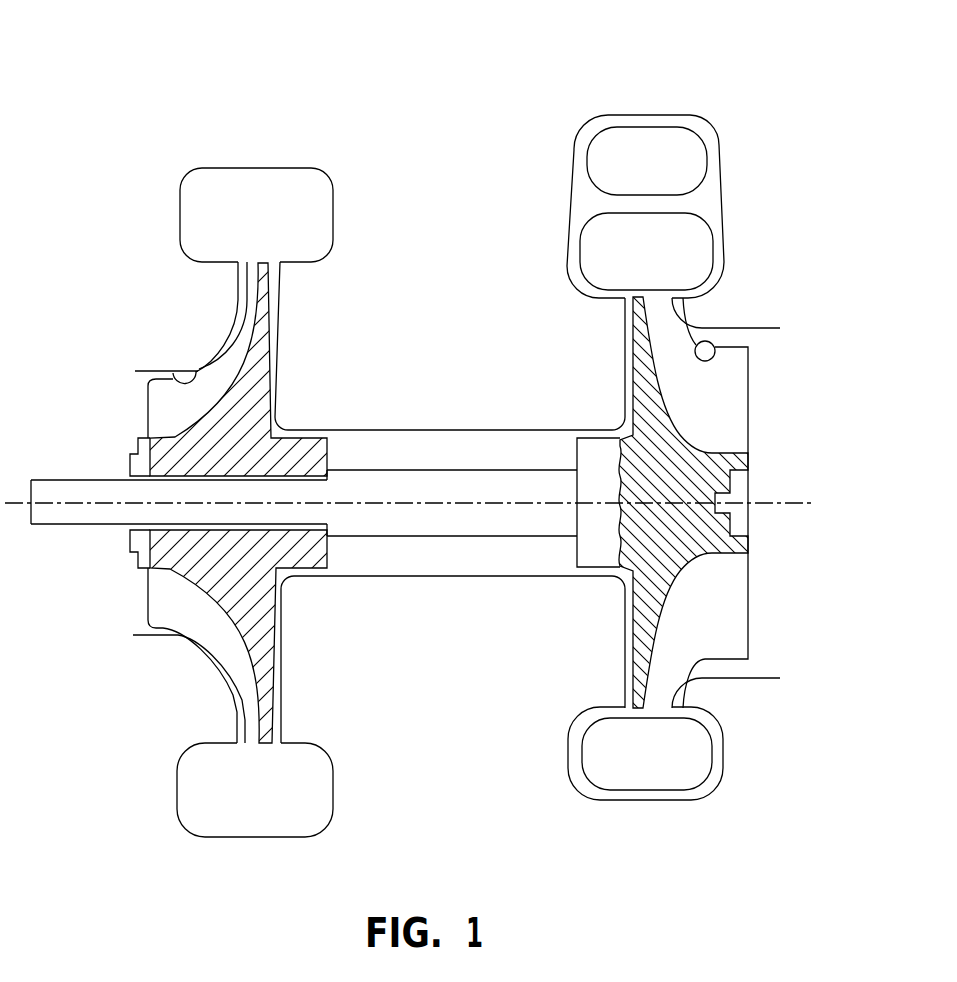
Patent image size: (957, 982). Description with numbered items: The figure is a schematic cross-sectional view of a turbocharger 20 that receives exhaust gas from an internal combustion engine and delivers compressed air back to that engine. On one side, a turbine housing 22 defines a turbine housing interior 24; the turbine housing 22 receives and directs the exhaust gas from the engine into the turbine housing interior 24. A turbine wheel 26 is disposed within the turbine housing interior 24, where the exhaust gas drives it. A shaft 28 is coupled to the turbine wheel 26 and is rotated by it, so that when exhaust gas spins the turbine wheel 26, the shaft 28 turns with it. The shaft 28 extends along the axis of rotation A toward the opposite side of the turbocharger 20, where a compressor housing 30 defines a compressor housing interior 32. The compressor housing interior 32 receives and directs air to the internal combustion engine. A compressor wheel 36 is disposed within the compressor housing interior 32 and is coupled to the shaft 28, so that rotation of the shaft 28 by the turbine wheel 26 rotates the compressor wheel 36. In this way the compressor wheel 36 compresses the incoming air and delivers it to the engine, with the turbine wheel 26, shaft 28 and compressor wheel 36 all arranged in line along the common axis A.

The turbocharger 20 is at (110, 126).
The turbine housing 22 is at (720, 185).
The turbine housing interior 24 is at (714, 350).
The turbine wheel 26 is at (678, 452).
The shaft 28 is at (440, 536).
The compressor housing 30 is at (235, 304).
The compressor housing interior 32 is at (196, 369).
The compressor wheel 36 is at (176, 438).
The axis of rotation A is at (790, 500).